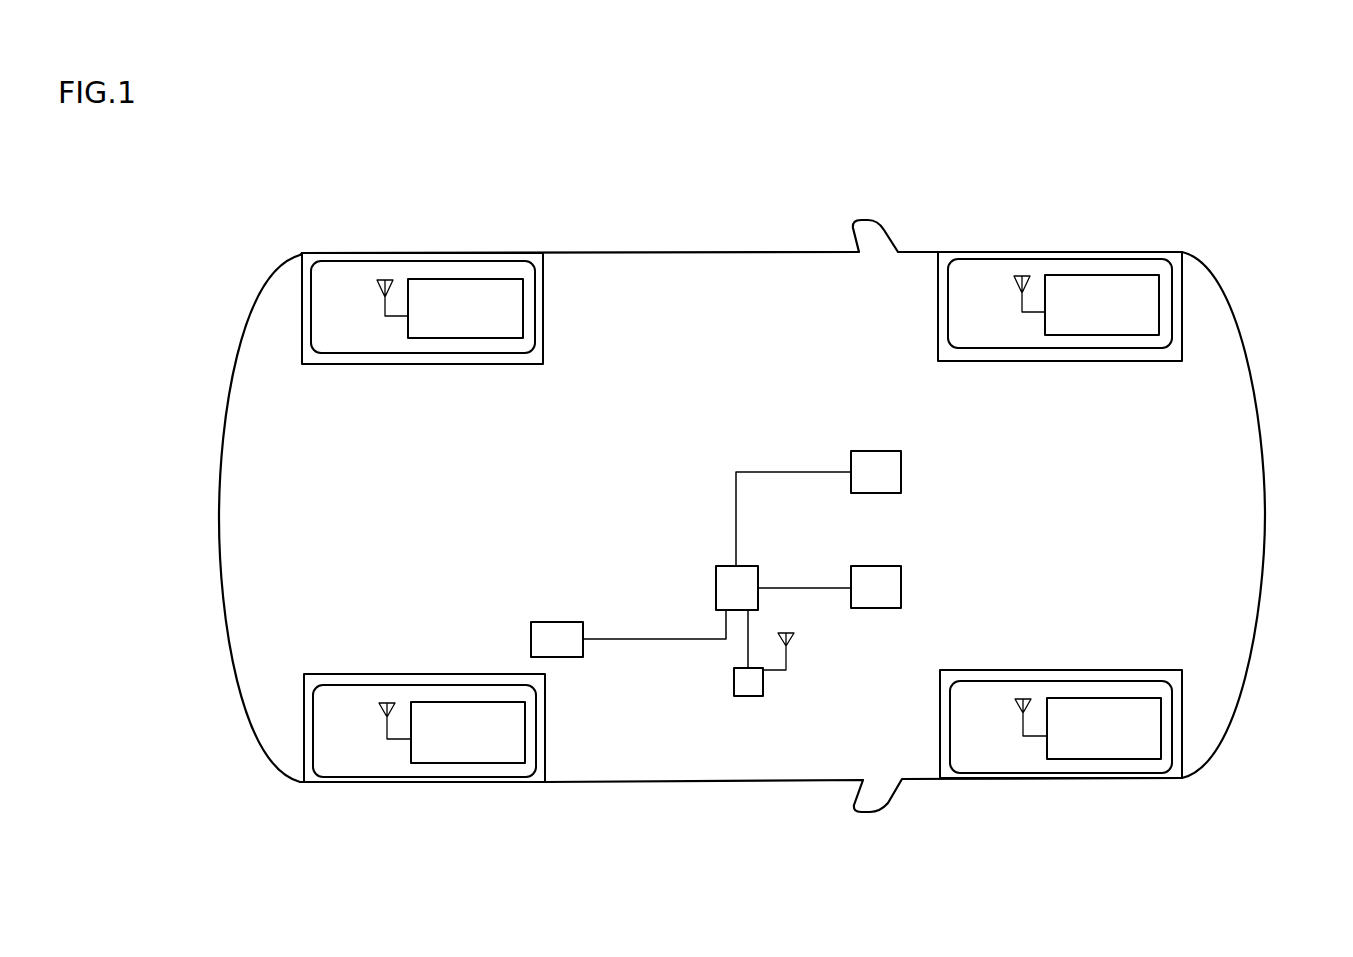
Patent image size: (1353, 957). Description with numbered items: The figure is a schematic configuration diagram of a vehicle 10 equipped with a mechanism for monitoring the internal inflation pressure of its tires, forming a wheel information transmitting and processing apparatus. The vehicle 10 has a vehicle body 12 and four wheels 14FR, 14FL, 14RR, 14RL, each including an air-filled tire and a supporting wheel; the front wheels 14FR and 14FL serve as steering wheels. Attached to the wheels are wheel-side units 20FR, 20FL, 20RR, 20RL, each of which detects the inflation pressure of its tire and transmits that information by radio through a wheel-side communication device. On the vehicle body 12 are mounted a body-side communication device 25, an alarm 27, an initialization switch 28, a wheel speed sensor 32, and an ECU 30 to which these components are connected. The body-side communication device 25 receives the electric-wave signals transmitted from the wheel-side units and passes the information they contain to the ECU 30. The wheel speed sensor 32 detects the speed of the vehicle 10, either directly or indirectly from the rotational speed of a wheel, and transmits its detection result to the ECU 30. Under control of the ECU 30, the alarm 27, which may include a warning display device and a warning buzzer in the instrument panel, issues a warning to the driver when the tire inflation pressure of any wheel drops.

The vehicle 10 is at (774, 541).
The vehicle body 12 is at (1245, 342).
The rear left wheel 14RL is at (471, 282).
The front left wheel 14FL is at (1122, 280).
The rear right wheel 14RR is at (473, 765).
The front right wheel 14FR is at (1128, 761).
The rear left wheel-side unit 20RL is at (523, 301).
The front left wheel-side unit 20FL is at (1159, 290).
The rear right wheel-side unit 20RR is at (525, 725).
The front right wheel-side unit 20FR is at (1161, 723).
The body-side communication device 25 is at (763, 688).
The alarm 27 is at (901, 578).
The initialization switch 28 is at (901, 463).
The ECU 30 is at (726, 564).
The wheel speed sensor 32 is at (564, 622).